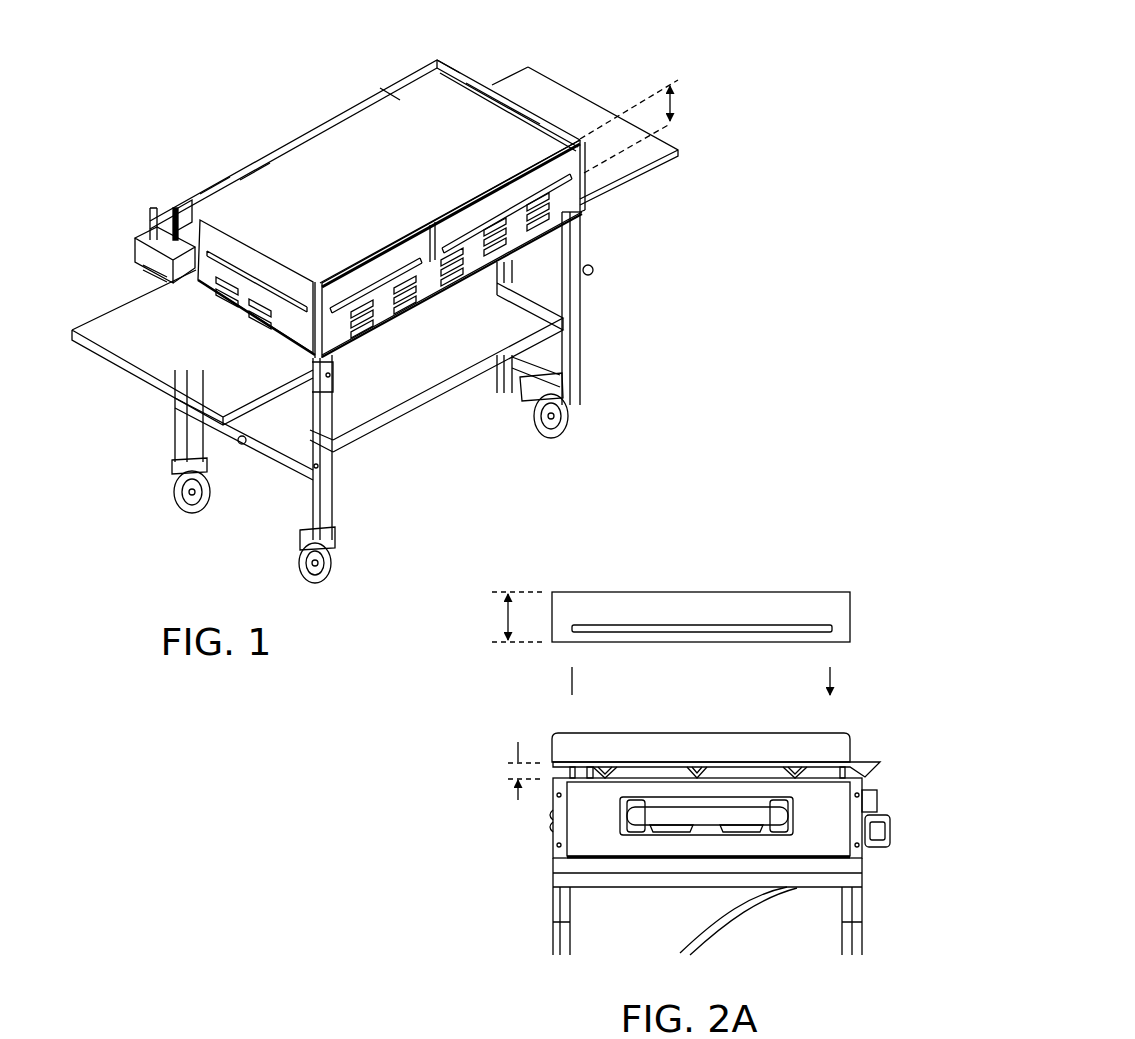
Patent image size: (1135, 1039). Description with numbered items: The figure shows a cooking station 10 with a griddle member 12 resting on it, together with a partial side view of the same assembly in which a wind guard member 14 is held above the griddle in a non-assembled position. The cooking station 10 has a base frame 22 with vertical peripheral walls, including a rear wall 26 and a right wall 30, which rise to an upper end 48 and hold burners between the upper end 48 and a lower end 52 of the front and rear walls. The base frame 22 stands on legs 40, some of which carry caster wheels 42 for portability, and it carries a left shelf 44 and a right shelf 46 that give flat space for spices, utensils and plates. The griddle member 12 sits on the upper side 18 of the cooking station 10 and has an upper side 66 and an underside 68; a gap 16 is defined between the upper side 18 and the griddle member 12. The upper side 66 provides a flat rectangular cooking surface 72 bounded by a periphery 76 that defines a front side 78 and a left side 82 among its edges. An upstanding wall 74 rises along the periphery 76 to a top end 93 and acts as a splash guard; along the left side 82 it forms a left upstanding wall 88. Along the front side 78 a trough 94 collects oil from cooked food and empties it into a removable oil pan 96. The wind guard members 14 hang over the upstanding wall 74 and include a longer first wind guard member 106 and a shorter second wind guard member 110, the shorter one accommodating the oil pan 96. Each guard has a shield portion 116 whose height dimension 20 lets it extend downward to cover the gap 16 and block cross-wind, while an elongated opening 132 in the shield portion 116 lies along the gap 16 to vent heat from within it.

In FIG. 1, the cooking station 10 is at (690, 248).
In FIG. 2A, the cooking station 10 is at (905, 805).
In FIG. 1, the griddle member 12 is at (346, 82).
In FIG. 2A, the griddle member 12 is at (880, 745).
In FIG. 1, the wind guard member 14 is at (565, 163).
In FIG. 2A, the wind guard member 14 is at (855, 610).
In FIG. 2A, the gap 16 is at (518, 798).
In FIG. 2A, the upper side 18 is at (572, 765).
In FIG. 1, the height dimension 20 is at (671, 105).
In FIG. 2A, the height dimension 20 is at (506, 614).
In FIG. 1, the base frame 22 is at (589, 233).
In FIG. 1, the rear wall 26 is at (574, 202).
In FIG. 1, the right wall 30 is at (298, 340).
In FIG. 1, the legs 40 is at (577, 345).
In FIG. 1, the wheels 42 is at (572, 420).
In FIG. 1, the left shelf 44 is at (528, 78).
In FIG. 1, the right shelf 46 is at (100, 325).
In FIG. 2A, the upper end 48 is at (667, 770).
In FIG. 1, the lower end 52 is at (350, 348).
In FIG. 1, the upper side 66 is at (250, 193).
In FIG. 2A, the underside 68 is at (633, 772).
In FIG. 1, the flat rectangular cooking surface 72 is at (298, 168).
In FIG. 1, the upstanding wall 74 is at (437, 83).
In FIG. 2A, the upstanding wall 74 is at (743, 733).
In FIG. 1, the periphery 76 is at (477, 102).
In FIG. 1, the front side 78 is at (396, 95).
In FIG. 1, the left side 82 is at (500, 113).
In FIG. 1, the left upstanding wall 88 is at (440, 110).
In FIG. 2A, the top end 93 is at (831, 752).
In FIG. 1, the trough 94 is at (206, 177).
In FIG. 1, the oil pan 96 is at (130, 250).
In FIG. 1, the first wind guard member 106 is at (546, 133).
In FIG. 1, the second wind guard member 110 is at (296, 266).
In FIG. 1, the shield portion 116 is at (378, 267).
In FIG. 1, the elongated opening 132 is at (232, 262).